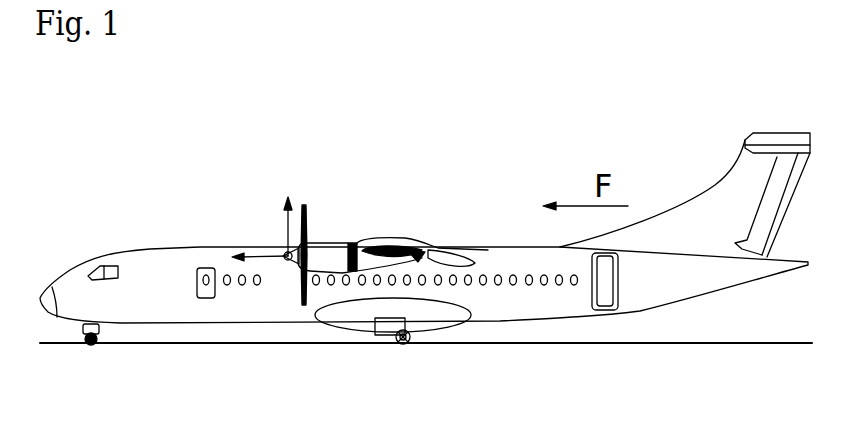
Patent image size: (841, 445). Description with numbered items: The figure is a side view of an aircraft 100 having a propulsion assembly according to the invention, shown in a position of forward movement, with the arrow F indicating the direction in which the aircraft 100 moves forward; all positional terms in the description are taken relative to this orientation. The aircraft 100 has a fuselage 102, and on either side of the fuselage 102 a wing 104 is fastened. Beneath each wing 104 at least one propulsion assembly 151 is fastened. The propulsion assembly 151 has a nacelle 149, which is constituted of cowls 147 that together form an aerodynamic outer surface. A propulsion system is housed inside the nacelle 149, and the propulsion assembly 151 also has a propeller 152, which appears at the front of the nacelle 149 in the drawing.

The aircraft 100 is at (506, 175).
The fuselage 102 is at (687, 283).
The wing 104 is at (442, 260).
The cowls 147 is at (322, 262).
The nacelle 149 is at (340, 242).
The propulsion assembly 151 is at (243, 178).
The propeller 152 is at (310, 296).